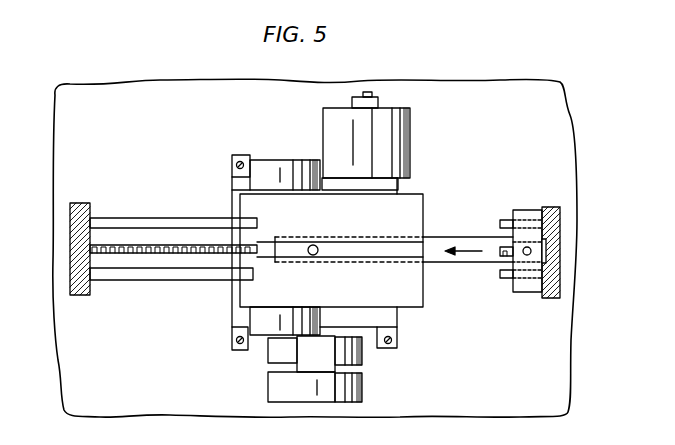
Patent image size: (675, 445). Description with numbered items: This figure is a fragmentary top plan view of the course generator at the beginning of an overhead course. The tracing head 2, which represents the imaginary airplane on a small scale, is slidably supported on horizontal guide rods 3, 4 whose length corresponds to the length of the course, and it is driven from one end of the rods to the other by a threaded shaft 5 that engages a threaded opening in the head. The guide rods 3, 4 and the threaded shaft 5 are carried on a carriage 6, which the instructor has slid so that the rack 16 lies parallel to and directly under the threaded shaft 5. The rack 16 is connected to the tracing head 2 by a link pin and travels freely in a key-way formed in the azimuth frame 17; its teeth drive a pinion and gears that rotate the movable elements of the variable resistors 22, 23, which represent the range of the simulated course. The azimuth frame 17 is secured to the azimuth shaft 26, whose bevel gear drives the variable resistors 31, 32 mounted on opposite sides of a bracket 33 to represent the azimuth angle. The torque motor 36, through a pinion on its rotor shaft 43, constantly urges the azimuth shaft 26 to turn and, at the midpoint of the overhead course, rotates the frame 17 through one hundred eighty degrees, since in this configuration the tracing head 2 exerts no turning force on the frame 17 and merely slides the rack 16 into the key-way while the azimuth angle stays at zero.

The tracing head 2 is at (536, 210).
The guide rod 3 is at (187, 281).
The guide rod 4 is at (197, 218).
The threaded shaft 5 is at (143, 255).
The carriage 6 is at (556, 207).
The rack 16 is at (468, 237).
The azimuth frame 17 is at (423, 305).
The variable resistor 22 is at (283, 160).
The variable resistor 23 is at (262, 334).
The azimuth shaft 26 is at (318, 248).
The variable resistor 31 is at (362, 390).
The variable resistor 32 is at (362, 352).
The bracket 33 is at (305, 362).
The torque motor 36 is at (410, 120).
The rotor shaft 43 is at (376, 95).